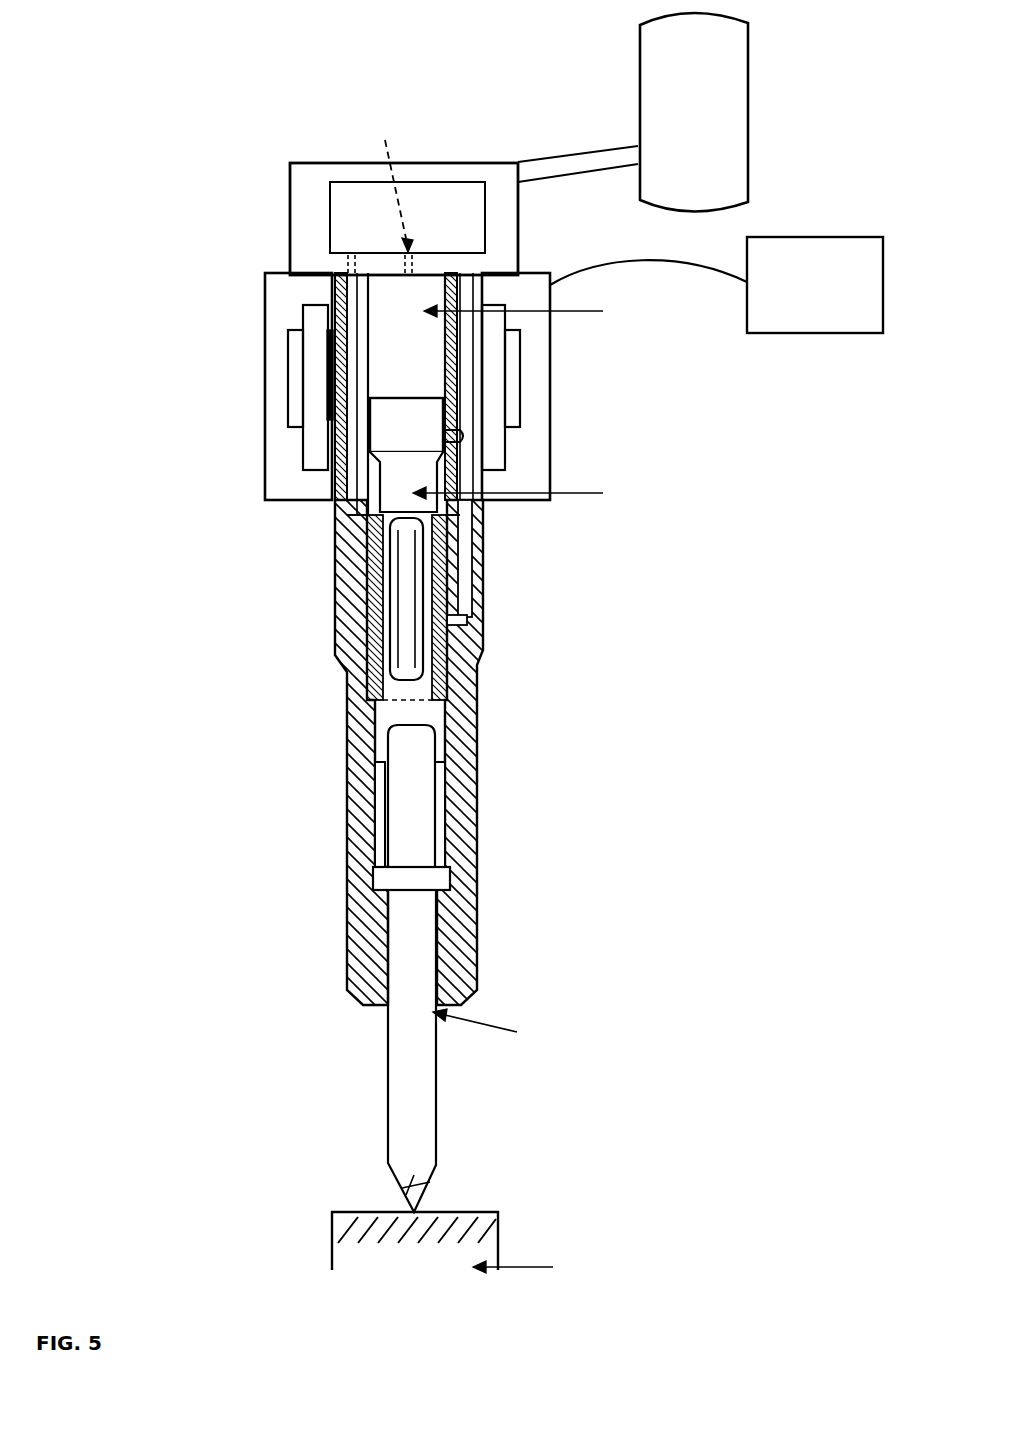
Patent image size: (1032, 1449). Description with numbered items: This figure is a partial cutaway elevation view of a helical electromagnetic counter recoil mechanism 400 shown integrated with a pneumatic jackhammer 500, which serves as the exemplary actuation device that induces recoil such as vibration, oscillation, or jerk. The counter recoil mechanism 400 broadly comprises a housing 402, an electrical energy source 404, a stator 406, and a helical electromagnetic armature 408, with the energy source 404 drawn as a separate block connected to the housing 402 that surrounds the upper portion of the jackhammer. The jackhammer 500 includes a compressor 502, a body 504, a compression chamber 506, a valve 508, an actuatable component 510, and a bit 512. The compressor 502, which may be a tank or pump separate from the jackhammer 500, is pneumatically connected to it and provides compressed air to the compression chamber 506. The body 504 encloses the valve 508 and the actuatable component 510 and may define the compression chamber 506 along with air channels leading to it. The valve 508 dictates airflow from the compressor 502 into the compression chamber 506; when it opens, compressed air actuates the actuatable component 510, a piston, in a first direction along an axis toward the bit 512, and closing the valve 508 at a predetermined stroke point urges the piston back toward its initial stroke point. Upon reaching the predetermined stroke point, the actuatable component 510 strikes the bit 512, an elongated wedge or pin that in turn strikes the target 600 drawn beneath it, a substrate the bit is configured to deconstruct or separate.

The helical electromagnetic counter recoil mechanism 400 is at (302, 413).
The housing 402 is at (283, 503).
The electrical energy source 404 is at (811, 335).
The stator 406 is at (303, 452).
The helical electromagnetic armature 408 is at (288, 388).
The pneumatic jackhammer 500 is at (209, 156).
The compressor 502 is at (640, 86).
The body 504 is at (337, 590).
The compression chamber 506 is at (421, 336).
The valve 508 is at (392, 242).
The actuatable component 510 is at (418, 510).
The bit 512 is at (420, 933).
The target 600 is at (478, 1223).